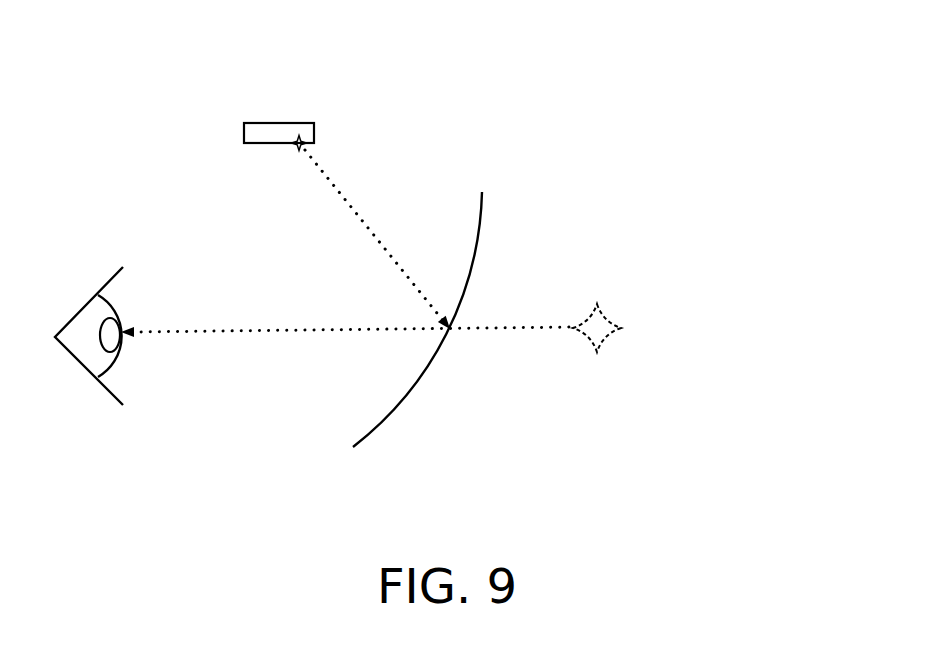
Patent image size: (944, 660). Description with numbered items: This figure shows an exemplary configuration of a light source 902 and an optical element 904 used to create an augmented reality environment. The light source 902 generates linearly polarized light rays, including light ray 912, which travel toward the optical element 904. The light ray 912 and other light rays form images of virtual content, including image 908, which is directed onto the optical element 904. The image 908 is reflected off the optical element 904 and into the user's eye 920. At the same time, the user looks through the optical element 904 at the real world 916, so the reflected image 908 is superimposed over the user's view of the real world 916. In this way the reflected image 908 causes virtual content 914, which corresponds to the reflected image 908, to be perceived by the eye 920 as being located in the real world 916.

The light source 902 is at (283, 124).
The image 908 is at (300, 149).
The light ray 912 is at (340, 187).
The optical element 904 is at (393, 410).
The virtual content 914 is at (596, 310).
The real world 916 is at (660, 189).
The user's eye 920 is at (108, 322).